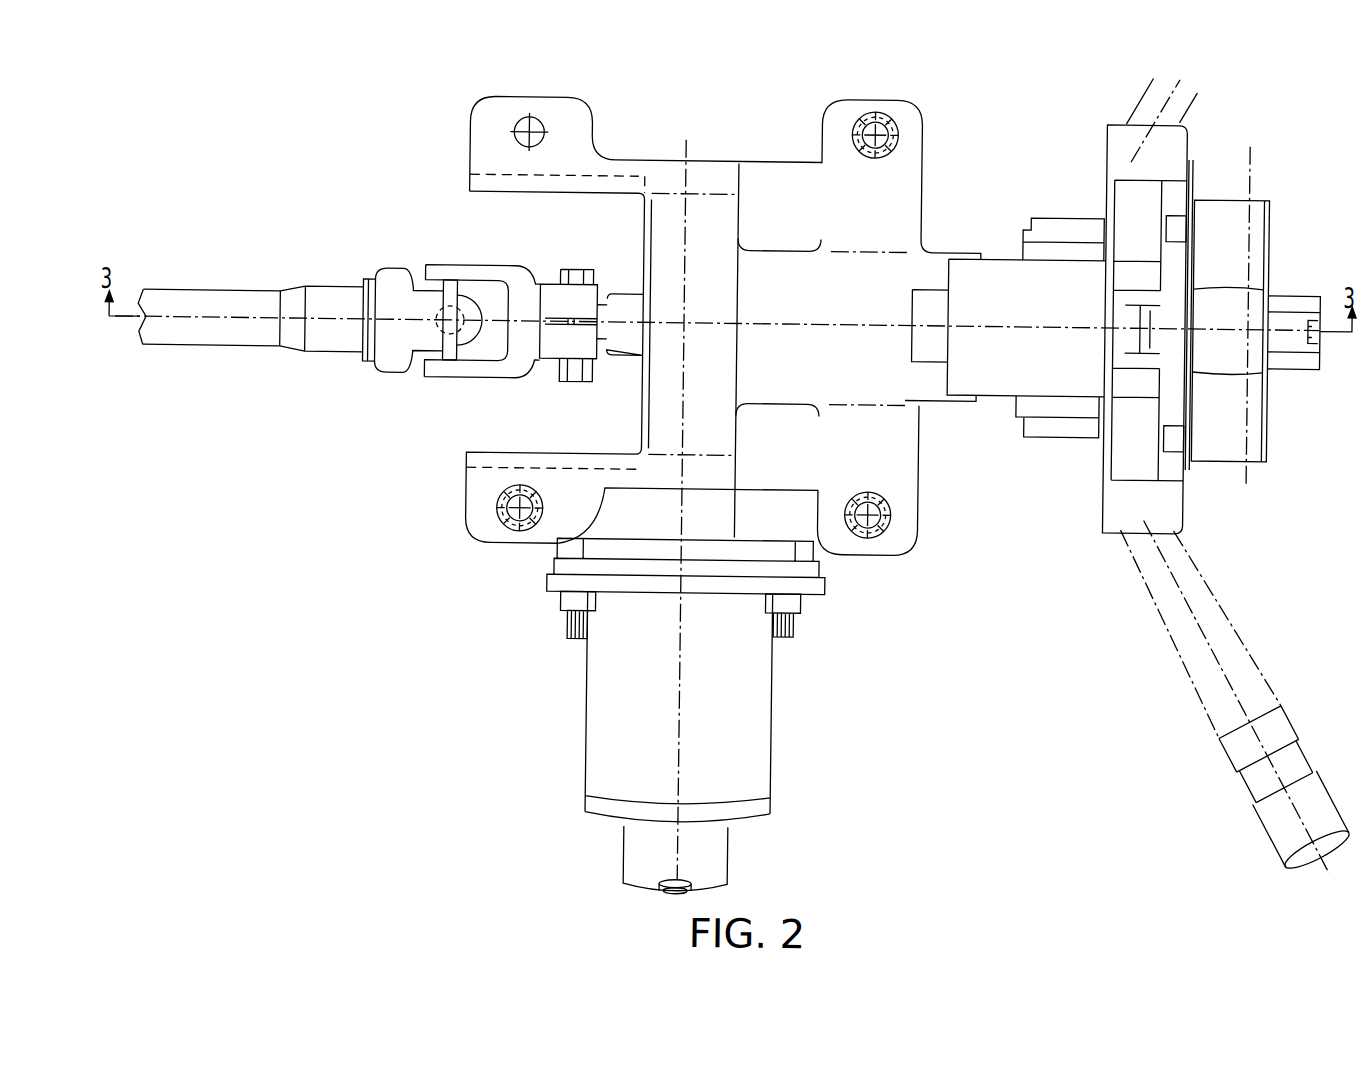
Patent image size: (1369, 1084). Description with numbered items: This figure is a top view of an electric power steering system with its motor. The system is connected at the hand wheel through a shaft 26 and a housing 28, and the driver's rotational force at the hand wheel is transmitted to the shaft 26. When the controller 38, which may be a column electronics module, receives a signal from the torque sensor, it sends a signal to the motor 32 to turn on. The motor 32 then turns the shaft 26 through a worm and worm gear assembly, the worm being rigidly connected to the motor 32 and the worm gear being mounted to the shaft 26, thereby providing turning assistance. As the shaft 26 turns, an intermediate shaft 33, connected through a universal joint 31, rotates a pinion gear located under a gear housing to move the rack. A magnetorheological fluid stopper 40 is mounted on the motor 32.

The shaft 26 is at (630, 353).
The housing 28 is at (948, 402).
The universal joint 31 is at (467, 268).
The motor 32 is at (622, 758).
The intermediate shaft 33 is at (190, 296).
The controller 38 is at (990, 276).
The magnetorheological fluid stopper 40 is at (630, 854).